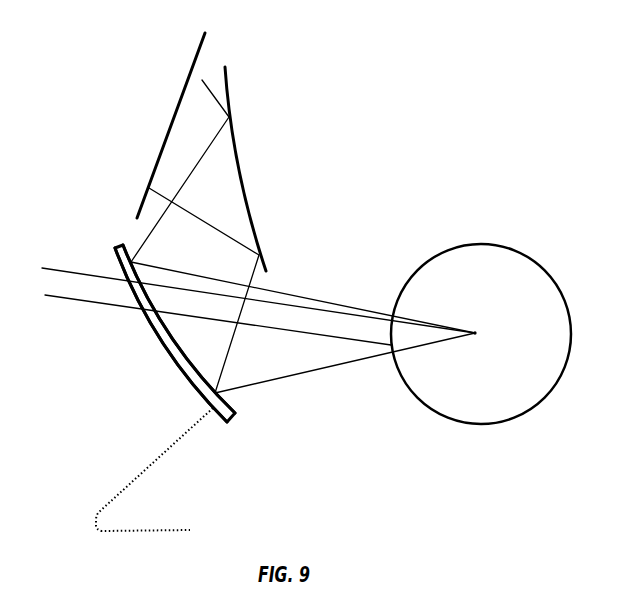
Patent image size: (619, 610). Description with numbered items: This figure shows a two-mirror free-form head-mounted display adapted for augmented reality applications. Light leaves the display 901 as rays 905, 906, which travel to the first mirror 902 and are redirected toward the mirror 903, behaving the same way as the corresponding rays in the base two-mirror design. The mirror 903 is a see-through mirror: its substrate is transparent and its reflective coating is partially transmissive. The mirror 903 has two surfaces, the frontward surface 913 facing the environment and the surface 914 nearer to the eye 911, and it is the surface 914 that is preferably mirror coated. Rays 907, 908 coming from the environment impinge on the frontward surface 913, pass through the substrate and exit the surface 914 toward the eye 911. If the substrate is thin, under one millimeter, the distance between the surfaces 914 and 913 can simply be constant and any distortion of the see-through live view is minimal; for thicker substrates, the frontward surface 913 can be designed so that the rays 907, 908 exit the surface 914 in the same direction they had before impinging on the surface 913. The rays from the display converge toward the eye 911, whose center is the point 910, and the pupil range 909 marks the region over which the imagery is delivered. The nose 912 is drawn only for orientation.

The display 901 is at (205, 33).
The first mirror 902 is at (236, 149).
The mirror 903 is at (116, 250).
The ray 905 is at (242, 243).
The ray 906 is at (202, 80).
The ray 907 is at (52, 297).
The ray 908 is at (58, 270).
The pupil range 909 is at (391, 337).
The center of the eye 910 is at (487, 317).
The eye 911 is at (513, 250).
The nose 912 is at (126, 485).
The frontward surface 913 is at (161, 341).
The surface 914 is at (180, 348).